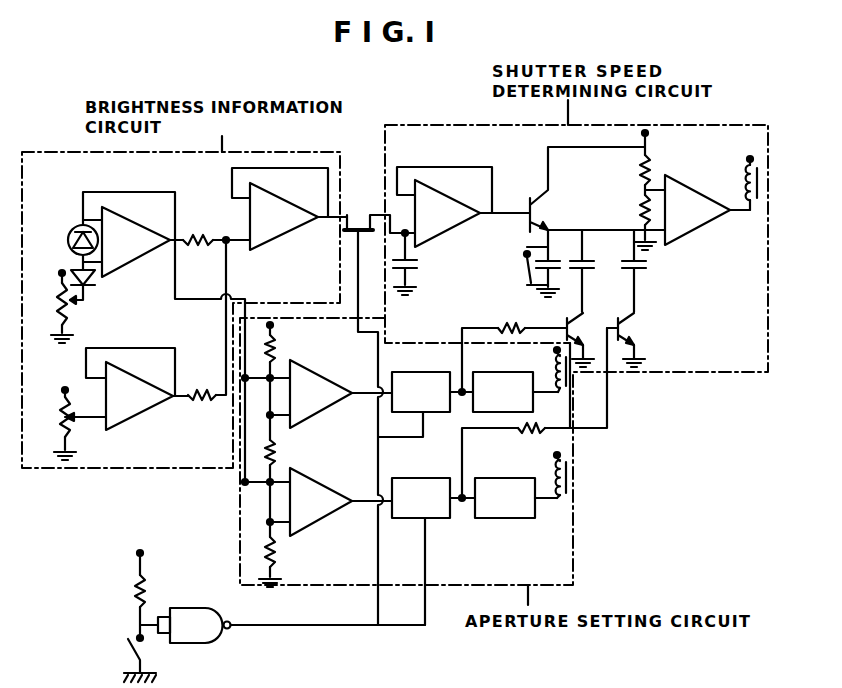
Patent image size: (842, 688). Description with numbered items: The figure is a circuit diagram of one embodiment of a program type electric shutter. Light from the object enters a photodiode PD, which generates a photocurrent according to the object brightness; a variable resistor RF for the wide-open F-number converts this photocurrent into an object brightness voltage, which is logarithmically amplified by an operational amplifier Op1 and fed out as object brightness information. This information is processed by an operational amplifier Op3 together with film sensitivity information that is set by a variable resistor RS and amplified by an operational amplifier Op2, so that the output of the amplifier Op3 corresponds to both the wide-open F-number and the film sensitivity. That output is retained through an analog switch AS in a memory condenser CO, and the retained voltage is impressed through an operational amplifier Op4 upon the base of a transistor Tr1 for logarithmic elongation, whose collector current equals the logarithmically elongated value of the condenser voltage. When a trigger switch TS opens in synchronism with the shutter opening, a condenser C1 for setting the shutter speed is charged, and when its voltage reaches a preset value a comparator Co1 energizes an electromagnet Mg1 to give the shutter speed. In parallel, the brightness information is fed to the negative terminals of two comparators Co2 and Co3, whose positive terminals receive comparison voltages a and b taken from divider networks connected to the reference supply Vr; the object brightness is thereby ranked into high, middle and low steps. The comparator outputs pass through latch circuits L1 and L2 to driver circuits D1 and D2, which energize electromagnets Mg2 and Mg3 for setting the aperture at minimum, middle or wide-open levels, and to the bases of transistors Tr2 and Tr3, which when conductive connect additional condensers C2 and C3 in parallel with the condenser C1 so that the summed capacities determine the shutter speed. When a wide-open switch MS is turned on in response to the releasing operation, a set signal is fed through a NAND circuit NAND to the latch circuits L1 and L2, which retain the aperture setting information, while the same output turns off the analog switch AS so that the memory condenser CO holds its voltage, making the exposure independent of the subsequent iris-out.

The operational amplifier Op1 is at (133, 234).
The photodiode PD is at (68, 242).
The variable resistor for wide-open F-number RF is at (50, 306).
The operational amplifier Op3 is at (289, 209).
The analog switch AS is at (379, 213).
The operational amplifier Op4 is at (463, 207).
The memory condenser CO is at (418, 262).
The transistor for logarithmic elongation Tr1 is at (587, 189).
The condenser for setting shutter speed C1 is at (554, 263).
The additional condenser C2 is at (589, 271).
The additional condenser C3 is at (628, 271).
The trigger switch TS is at (519, 266).
The reference voltage Vr is at (470, 231).
The comparator Co1 is at (707, 210).
The electromagnet Mg1 is at (743, 175).
The transistor Tr2 is at (562, 340).
The transistor Tr3 is at (630, 340).
The comparison voltage a is at (262, 416).
The comparison voltage b is at (262, 523).
The comparator Co2 is at (341, 394).
The comparator Co3 is at (341, 502).
The latch circuit L1 is at (425, 404).
The latch circuit L2 is at (433, 551).
The driver circuit D1 is at (515, 392).
The driver circuit D2 is at (516, 498).
The electromagnet for setting aperture Mg2 is at (536, 369).
The electromagnet for setting aperture Mg3 is at (536, 475).
The operational amplifier Op2 is at (126, 389).
The variable resistor for film sensitivity RS is at (51, 423).
The NAND circuit NAND is at (282, 625).
The wide-open switch MS is at (125, 616).